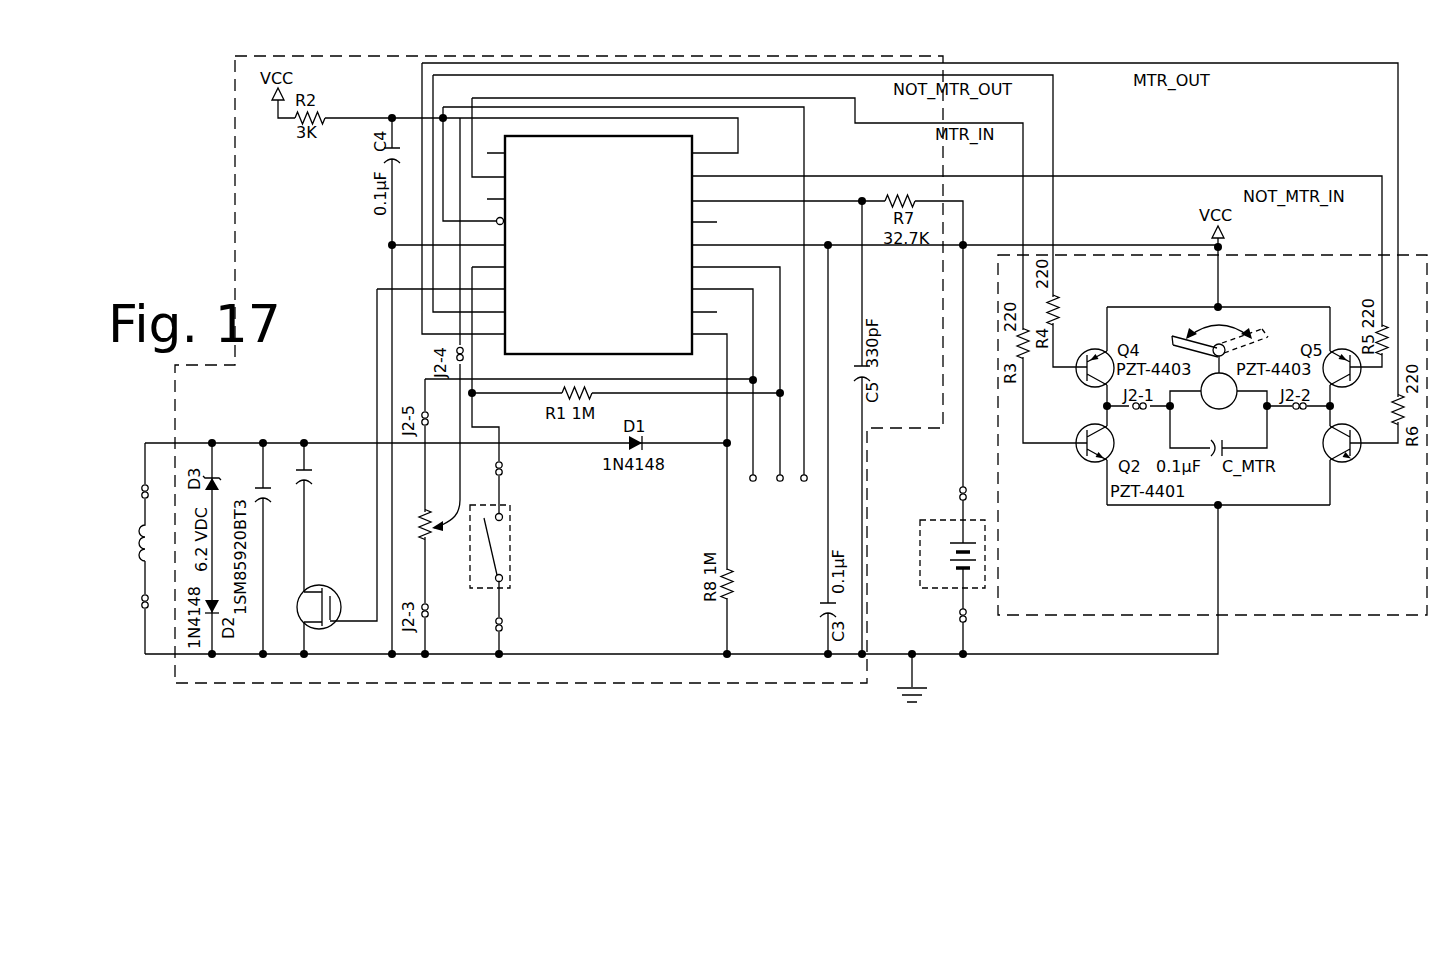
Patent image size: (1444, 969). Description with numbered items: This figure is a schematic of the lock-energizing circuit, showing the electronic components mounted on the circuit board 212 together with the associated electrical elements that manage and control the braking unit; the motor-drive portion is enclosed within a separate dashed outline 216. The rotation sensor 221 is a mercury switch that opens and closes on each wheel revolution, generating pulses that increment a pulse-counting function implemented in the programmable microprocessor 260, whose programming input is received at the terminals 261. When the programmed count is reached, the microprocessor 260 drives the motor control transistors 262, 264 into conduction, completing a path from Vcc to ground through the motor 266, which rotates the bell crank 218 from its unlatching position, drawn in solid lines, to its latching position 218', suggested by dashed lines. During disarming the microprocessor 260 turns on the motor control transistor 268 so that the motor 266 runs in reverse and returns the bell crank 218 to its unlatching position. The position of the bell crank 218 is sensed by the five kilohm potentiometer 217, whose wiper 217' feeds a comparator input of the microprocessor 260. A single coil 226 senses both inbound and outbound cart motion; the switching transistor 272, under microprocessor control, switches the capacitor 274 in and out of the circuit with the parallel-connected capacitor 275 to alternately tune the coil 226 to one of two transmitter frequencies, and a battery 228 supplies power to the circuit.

The circuit board 212 is at (236, 192).
The motor drive circuit 216 is at (1426, 536).
The potentiometer 217 is at (386, 495).
The wiper 217' is at (498, 504).
The bell crank 218 is at (1199, 332).
The latching position of bell crank 218' is at (1261, 322).
The rotation sensor 221 is at (506, 590).
The coil 226 is at (145, 522).
The battery 228 is at (936, 595).
The microprocessor 260 is at (593, 358).
The terminals 261 is at (774, 553).
The motor control transistor 262 is at (1093, 466).
The motor control transistor 264 is at (1343, 388).
The motor 266 is at (1223, 412).
The motor control transistor 268 is at (1091, 388).
The switching transistor 272 is at (321, 630).
The capacitor 274 is at (300, 469).
The capacitor 275 is at (258, 487).